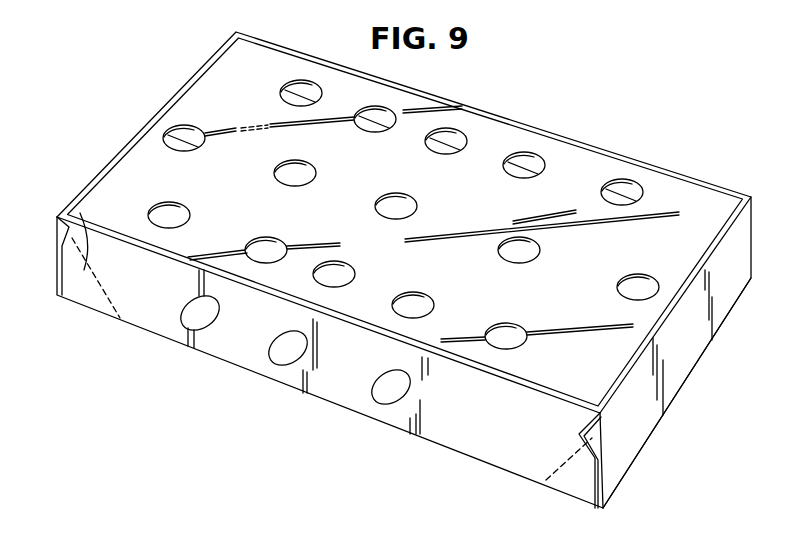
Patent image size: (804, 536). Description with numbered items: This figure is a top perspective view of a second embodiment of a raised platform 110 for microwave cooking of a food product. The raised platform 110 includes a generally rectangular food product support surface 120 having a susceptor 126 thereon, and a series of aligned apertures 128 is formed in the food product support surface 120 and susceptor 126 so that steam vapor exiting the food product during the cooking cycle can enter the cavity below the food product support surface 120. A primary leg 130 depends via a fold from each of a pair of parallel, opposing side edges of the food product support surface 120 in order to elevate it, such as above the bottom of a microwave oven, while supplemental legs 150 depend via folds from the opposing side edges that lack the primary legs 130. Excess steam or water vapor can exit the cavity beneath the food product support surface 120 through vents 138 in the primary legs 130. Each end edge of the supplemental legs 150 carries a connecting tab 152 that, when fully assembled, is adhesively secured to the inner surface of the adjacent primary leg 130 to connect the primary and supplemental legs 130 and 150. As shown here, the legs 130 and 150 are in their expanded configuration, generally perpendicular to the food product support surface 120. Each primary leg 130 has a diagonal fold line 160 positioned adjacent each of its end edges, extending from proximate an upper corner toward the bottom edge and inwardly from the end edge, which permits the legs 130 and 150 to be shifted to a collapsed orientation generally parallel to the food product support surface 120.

The raised platform 110 is at (551, 118).
The food product support surface 120 is at (633, 160).
The susceptor 126 is at (676, 258).
The apertures 128 is at (643, 300).
The primary leg 130 is at (123, 323).
The vents 138 is at (390, 402).
The supplemental legs 150 is at (639, 452).
The connecting tab 152 is at (546, 480).
The diagonal fold line 160 is at (80, 215).